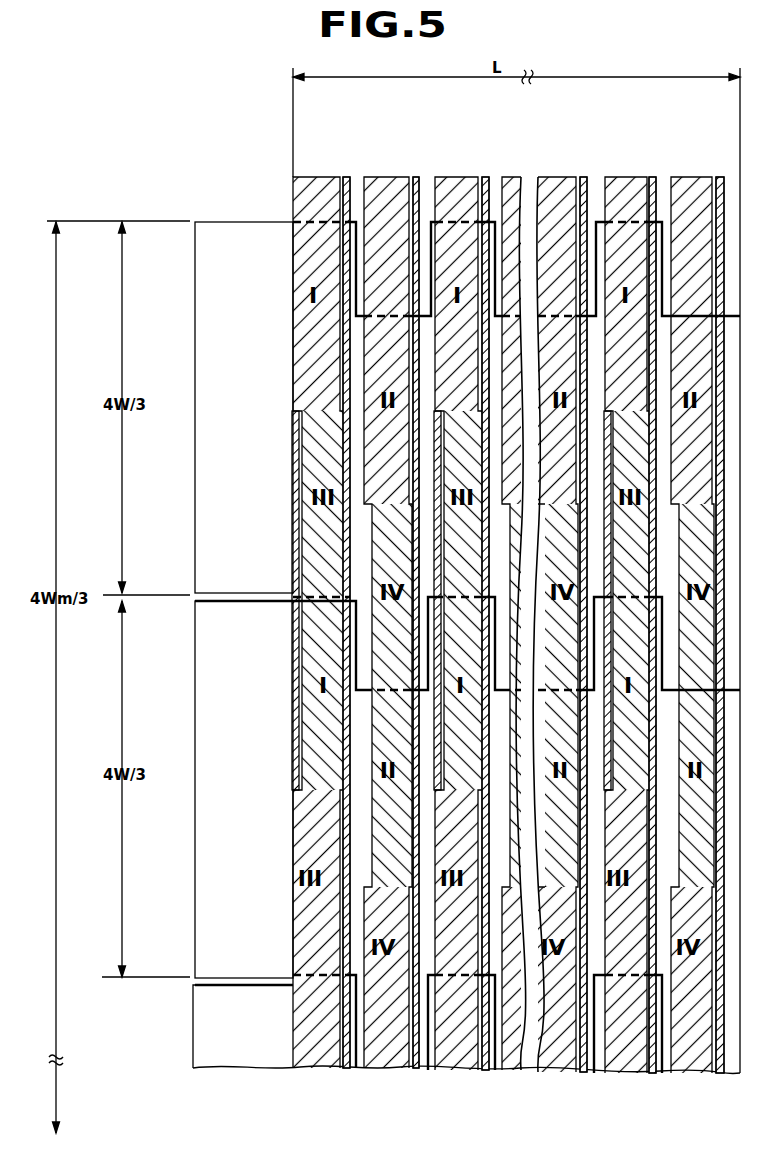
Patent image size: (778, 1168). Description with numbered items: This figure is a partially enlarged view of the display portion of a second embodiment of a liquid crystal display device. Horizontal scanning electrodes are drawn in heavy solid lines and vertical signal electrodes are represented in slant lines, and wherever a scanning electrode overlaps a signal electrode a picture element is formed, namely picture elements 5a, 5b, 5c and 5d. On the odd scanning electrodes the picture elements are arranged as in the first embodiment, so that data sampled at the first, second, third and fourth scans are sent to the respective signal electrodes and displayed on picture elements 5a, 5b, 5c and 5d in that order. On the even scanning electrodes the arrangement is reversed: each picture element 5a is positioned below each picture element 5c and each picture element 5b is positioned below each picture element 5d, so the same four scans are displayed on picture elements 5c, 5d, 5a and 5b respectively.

The picture element 5a is at (300, 298).
The picture element 5b is at (368, 361).
The picture element 5c is at (312, 445).
The picture element 5d is at (380, 548).